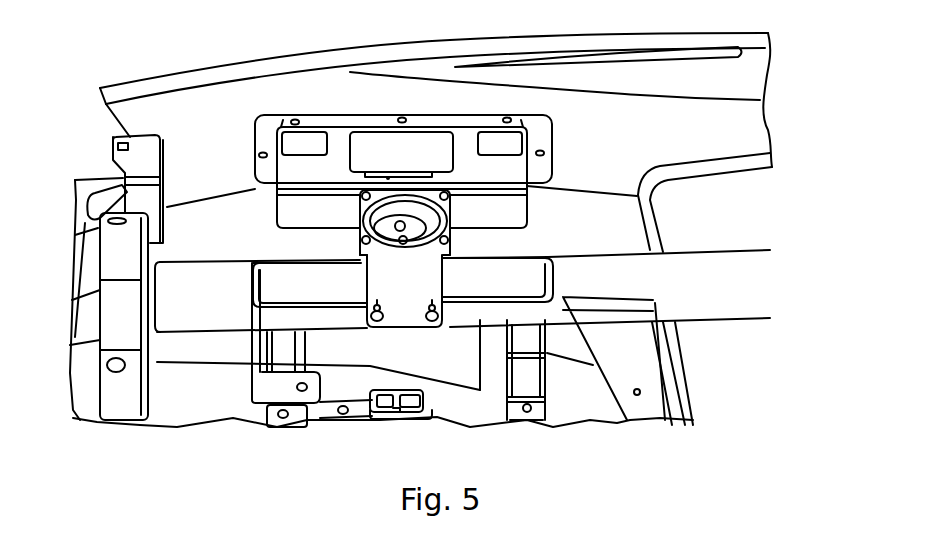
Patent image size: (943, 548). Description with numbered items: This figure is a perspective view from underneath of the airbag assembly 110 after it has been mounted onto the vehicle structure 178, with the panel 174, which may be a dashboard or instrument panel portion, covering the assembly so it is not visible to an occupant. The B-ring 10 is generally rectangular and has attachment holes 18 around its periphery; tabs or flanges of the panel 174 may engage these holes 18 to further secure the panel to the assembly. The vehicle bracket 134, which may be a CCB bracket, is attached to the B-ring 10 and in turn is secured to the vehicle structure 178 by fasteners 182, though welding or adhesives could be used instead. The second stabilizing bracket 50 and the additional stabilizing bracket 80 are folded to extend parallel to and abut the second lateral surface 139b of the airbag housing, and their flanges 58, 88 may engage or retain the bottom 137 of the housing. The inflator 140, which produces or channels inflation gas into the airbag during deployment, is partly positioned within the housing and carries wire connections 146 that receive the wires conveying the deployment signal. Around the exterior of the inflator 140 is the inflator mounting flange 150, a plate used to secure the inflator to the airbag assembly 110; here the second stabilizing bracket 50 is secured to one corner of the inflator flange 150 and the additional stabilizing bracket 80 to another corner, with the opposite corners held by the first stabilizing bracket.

The B-ring 10 is at (548, 136).
The attachment holes 18 is at (296, 120).
The second stabilizing bracket 50 is at (465, 160).
The flange 58 is at (524, 200).
The additional stabilizing bracket 80 is at (332, 162).
The flange 88 is at (342, 190).
The airbag assembly 110 is at (256, 194).
The vehicle bracket 134 is at (425, 280).
The bottom 137 is at (508, 226).
The second lateral surface 139b is at (357, 152).
The inflator 140 is at (362, 212).
The wire connections 146 is at (360, 244).
The inflator mounting flange 150 is at (447, 225).
The panel 174 is at (362, 84).
The vehicle structure 178 is at (640, 283).
The fasteners 182 is at (383, 313).